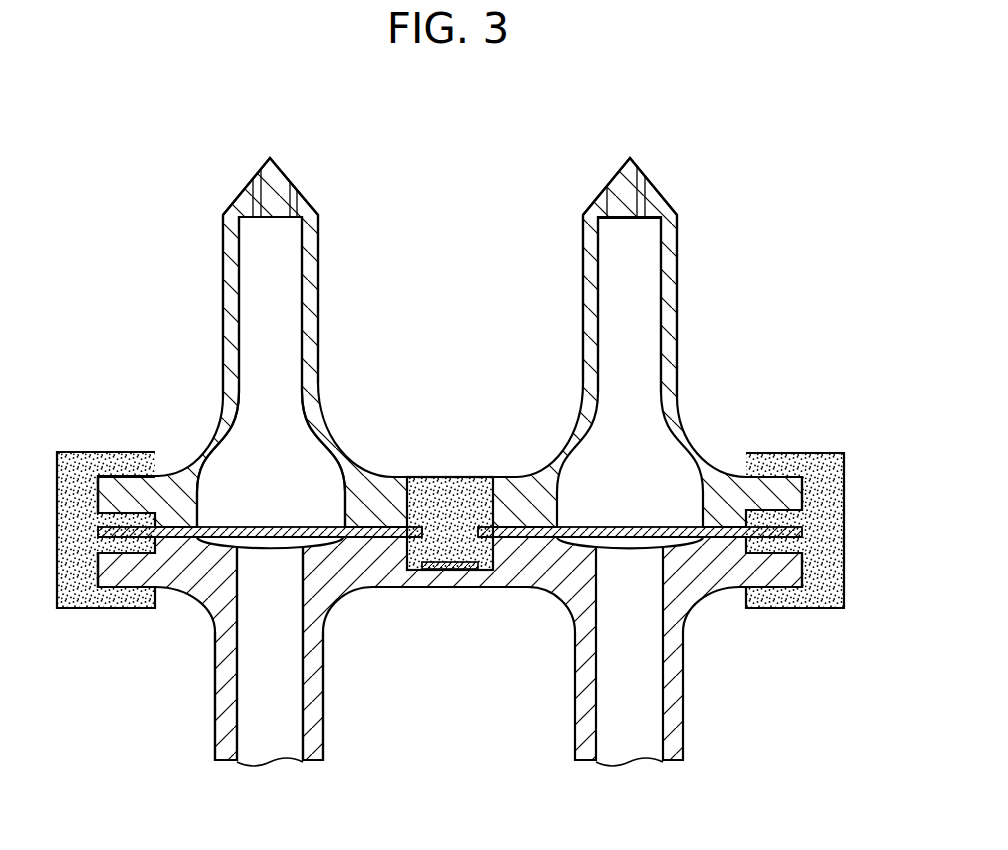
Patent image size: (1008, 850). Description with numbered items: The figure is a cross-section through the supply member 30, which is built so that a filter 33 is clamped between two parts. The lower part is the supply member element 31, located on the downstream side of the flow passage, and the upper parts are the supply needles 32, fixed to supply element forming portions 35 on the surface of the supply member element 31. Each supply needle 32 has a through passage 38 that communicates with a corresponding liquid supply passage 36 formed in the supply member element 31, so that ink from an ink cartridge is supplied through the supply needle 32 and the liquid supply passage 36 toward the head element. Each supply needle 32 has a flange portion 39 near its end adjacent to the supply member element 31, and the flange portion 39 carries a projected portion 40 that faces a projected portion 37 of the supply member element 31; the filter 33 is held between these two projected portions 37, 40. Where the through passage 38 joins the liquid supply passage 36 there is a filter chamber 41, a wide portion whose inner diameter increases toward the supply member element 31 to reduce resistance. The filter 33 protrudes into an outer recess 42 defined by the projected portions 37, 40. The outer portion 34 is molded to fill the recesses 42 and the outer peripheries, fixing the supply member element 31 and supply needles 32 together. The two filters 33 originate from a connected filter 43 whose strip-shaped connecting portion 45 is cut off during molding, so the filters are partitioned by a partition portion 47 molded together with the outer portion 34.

The supply member 30 is at (822, 171).
The supply member element 31 is at (700, 593).
The supply needle 32 is at (663, 248).
The filter 33 is at (265, 527).
The outer portion 34 is at (825, 587).
The supply element forming portion 35 is at (409, 245).
The liquid supply passage 36 is at (238, 643).
The projected portion 37 is at (173, 547).
The through passage 38 is at (254, 260).
The flange portion 39 is at (376, 482).
The projected portion 40 is at (173, 513).
The filter chamber 41 is at (323, 455).
The outer recess 42 is at (98, 543).
The connected filter 43 is at (620, 527).
The connecting portion 45 is at (445, 572).
The partition portion 47 is at (453, 487).